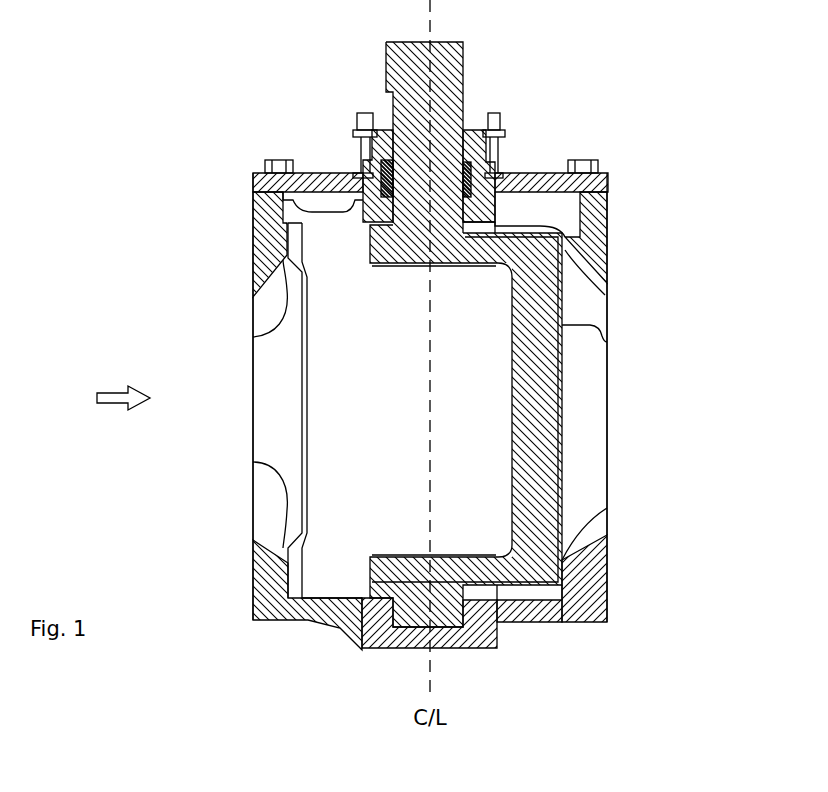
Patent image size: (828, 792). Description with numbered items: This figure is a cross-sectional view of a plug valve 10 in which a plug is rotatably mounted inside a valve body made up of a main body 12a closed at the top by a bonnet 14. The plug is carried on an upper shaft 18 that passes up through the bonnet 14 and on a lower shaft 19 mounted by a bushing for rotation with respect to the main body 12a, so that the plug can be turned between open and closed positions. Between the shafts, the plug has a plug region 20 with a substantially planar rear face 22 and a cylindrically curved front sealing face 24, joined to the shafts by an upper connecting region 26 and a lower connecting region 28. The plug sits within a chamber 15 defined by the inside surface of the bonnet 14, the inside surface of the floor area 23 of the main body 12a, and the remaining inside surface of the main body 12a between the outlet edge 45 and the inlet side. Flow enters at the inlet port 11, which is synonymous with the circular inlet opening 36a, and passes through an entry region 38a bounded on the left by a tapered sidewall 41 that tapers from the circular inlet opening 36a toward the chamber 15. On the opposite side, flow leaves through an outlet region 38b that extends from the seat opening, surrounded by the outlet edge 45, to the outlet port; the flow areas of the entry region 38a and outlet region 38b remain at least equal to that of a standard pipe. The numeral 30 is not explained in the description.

The plug valve 10 is at (222, 410).
The inlet port 11 is at (112, 404).
The main body 12a is at (607, 241).
The bonnet 14 is at (530, 173).
The chamber 15 is at (434, 410).
The upper shaft 18 is at (466, 88).
The lower shaft 19 is at (462, 650).
The plug region 20 is at (536, 426).
The rear face 22 is at (510, 417).
The floor area 23 is at (318, 597).
The front sealing face 24 is at (607, 342).
The upper connecting region 26 is at (452, 266).
The lower connecting region 28 is at (413, 558).
The valve body 30 is at (253, 237).
The circular inlet opening 36a is at (253, 288).
The entry region 38a is at (270, 418).
The outlet region 38b is at (587, 409).
The tapered sidewall 41 is at (253, 337).
The outlet edge 45 is at (605, 295).